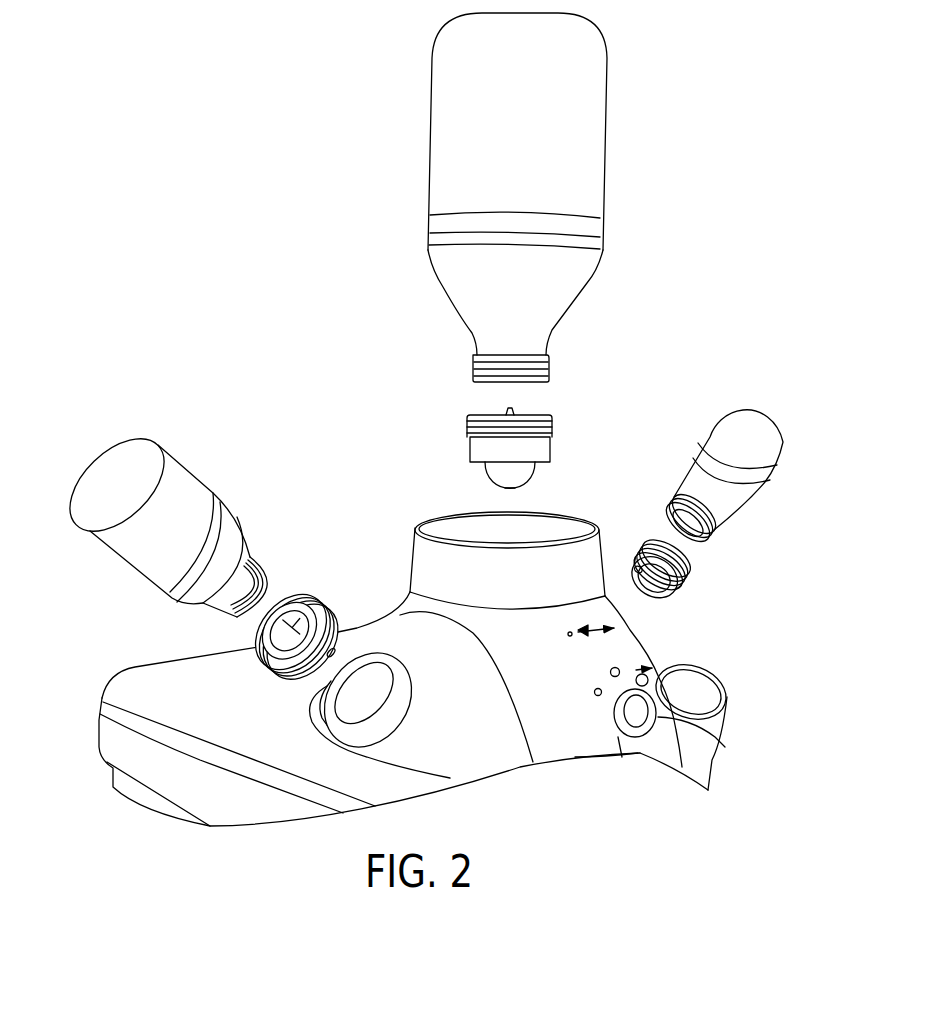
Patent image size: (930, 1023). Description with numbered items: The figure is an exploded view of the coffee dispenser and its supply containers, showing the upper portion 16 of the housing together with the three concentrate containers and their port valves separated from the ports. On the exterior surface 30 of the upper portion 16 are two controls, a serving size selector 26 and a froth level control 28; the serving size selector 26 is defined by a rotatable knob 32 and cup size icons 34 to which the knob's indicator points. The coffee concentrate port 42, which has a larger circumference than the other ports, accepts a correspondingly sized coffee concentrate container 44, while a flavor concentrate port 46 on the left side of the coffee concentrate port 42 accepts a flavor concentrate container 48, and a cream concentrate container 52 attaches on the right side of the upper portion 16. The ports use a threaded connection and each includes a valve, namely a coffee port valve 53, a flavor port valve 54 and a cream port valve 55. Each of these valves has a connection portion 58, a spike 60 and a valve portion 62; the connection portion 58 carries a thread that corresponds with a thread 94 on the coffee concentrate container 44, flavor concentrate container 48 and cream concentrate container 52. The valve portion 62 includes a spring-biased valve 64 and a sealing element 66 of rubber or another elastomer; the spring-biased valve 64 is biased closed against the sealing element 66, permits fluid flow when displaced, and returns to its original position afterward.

The upper portion 16 is at (378, 495).
The serving size selector 26 is at (638, 760).
The froth level control 28 is at (635, 630).
The exterior surface 30 is at (477, 708).
The rotatable knob 32 is at (645, 714).
The cup size icons 34 is at (722, 705).
The coffee concentrate port 42 is at (585, 508).
The coffee concentrate container 44 is at (598, 147).
The flavor concentrate port 46 is at (384, 633).
The flavor concentrate container 48 is at (120, 460).
The cream concentrate container 52 is at (754, 428).
The coffee port valve 53 is at (548, 399).
The flavor port valve 54 is at (230, 637).
The cream port valve 55 is at (657, 525).
The connection portion 58 is at (468, 425).
The spike 60 is at (508, 408).
The valve portion 62 is at (496, 477).
The spring-biased valve 64 is at (487, 470).
The sealing element 66 is at (551, 436).
The thread 94 is at (472, 365).